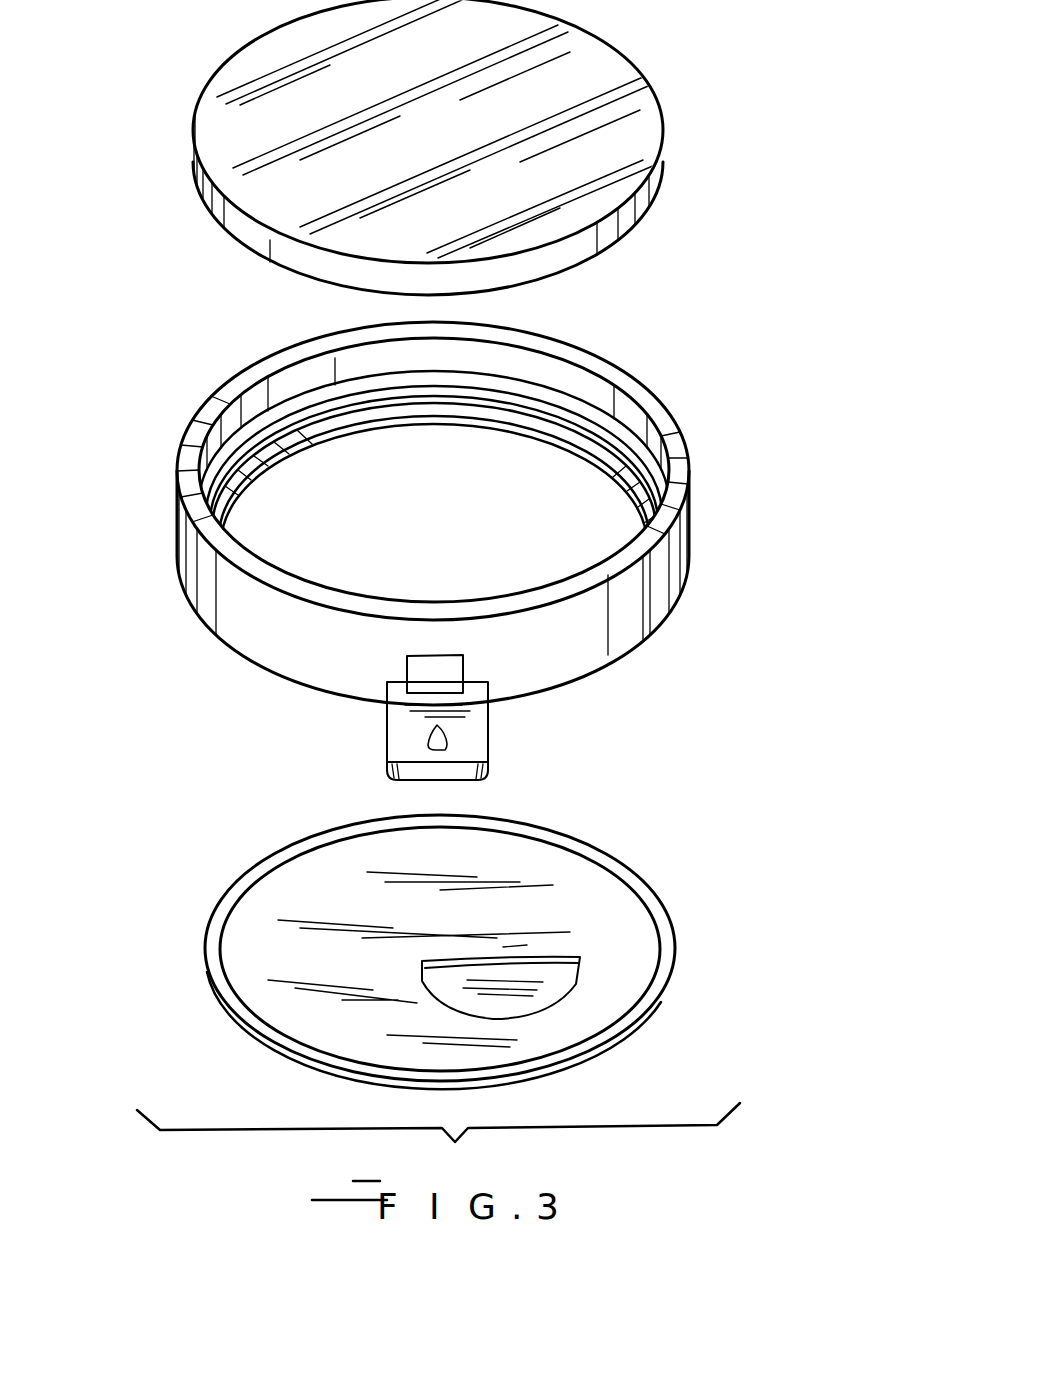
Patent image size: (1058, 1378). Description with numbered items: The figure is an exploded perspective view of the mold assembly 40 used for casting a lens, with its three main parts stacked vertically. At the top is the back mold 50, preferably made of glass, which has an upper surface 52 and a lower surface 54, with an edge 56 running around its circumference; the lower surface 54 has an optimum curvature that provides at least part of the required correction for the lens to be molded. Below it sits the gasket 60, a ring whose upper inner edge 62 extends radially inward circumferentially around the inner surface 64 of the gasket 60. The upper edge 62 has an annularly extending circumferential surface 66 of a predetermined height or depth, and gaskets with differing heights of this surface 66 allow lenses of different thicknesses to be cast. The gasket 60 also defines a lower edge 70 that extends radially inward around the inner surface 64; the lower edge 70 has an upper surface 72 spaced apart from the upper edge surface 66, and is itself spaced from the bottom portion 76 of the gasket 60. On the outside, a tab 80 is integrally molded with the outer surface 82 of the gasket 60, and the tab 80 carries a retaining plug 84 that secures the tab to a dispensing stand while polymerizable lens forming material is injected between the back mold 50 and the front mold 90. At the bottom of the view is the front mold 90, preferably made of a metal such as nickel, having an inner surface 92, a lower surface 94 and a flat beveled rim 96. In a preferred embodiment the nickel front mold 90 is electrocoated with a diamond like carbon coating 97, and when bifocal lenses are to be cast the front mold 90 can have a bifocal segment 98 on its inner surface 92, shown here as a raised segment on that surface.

The mold assembly 40 is at (714, 203).
The back mold 50 is at (379, 163).
The upper surface 52 is at (277, 55).
The lower surface 54 is at (253, 258).
The edge 56 is at (200, 198).
The gasket 60 is at (421, 511).
The upper inner edge 62 is at (607, 443).
The inner surface 64 is at (583, 390).
The circumferential surface 66 is at (607, 453).
The lower edge 70 is at (283, 443).
The upper surface 72 is at (347, 408).
The bottom portion 76 is at (227, 657).
The tab 80 is at (430, 717).
The outer surface 82 is at (583, 636).
The retaining plug 84 is at (427, 739).
The front mold 90 is at (423, 935).
The inner surface 92 is at (578, 887).
The lower surface 94 is at (615, 1043).
The beveled rim 96 is at (660, 913).
The diamond like carbon coating 97 is at (368, 910).
The bifocal segment 98 is at (573, 977).